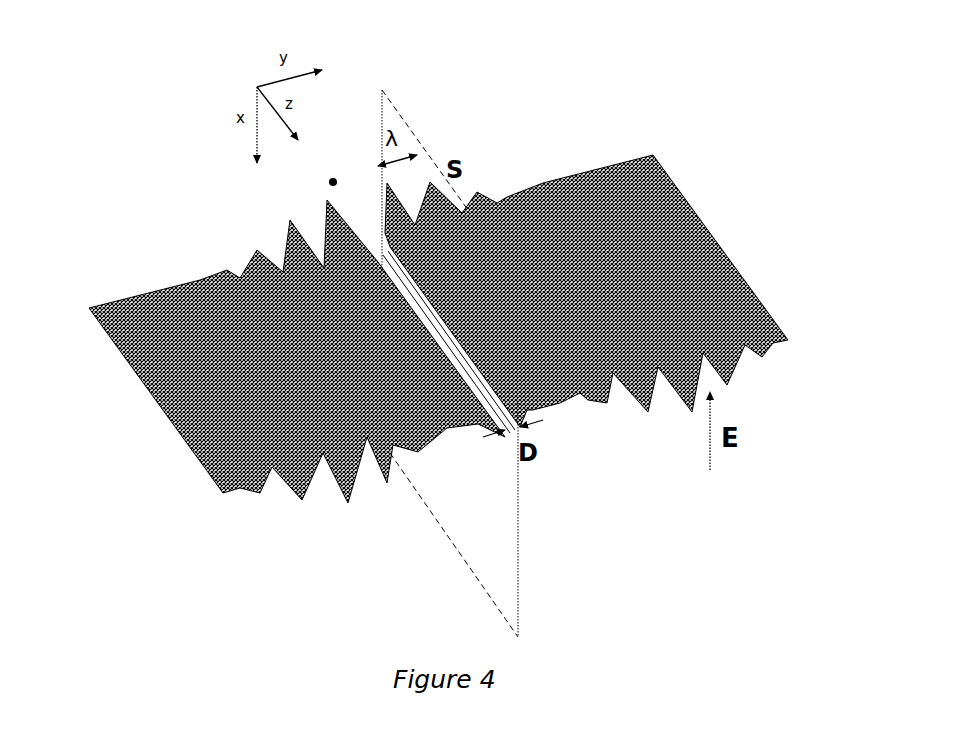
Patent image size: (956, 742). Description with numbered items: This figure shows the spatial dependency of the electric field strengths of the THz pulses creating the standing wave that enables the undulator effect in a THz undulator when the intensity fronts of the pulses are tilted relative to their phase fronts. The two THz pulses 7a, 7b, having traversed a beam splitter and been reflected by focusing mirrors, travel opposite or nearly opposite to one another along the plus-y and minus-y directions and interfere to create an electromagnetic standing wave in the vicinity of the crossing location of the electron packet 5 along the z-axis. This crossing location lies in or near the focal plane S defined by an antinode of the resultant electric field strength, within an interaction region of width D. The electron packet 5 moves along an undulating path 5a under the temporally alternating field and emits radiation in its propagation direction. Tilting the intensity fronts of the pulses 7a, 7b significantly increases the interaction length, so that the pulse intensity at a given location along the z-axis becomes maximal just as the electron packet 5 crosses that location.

The electron packet 5 is at (380, 242).
The undulating path 5a is at (449, 342).
The THz pulse 7a is at (455, 490).
The THz pulse 7b is at (653, 432).